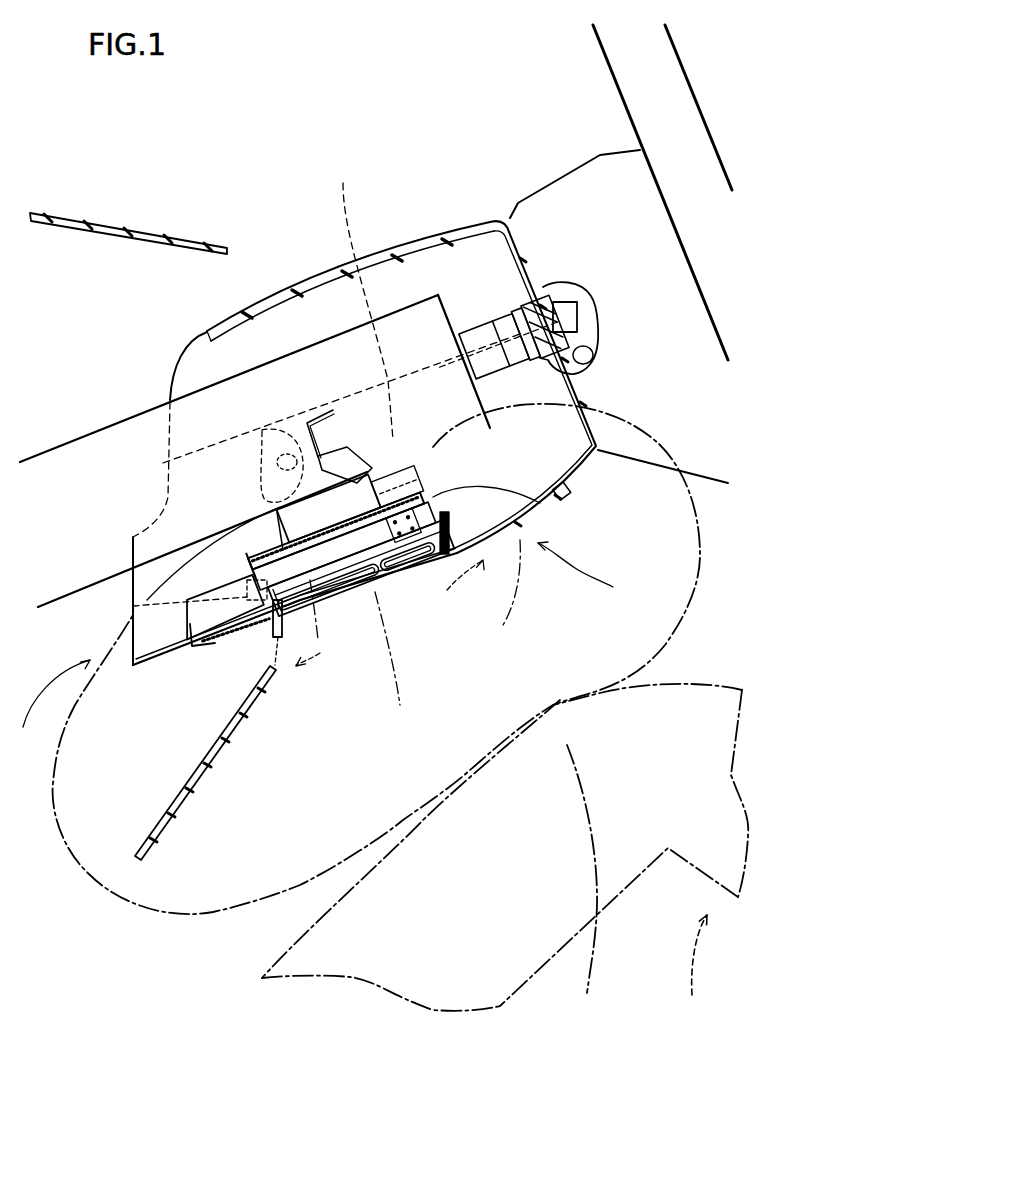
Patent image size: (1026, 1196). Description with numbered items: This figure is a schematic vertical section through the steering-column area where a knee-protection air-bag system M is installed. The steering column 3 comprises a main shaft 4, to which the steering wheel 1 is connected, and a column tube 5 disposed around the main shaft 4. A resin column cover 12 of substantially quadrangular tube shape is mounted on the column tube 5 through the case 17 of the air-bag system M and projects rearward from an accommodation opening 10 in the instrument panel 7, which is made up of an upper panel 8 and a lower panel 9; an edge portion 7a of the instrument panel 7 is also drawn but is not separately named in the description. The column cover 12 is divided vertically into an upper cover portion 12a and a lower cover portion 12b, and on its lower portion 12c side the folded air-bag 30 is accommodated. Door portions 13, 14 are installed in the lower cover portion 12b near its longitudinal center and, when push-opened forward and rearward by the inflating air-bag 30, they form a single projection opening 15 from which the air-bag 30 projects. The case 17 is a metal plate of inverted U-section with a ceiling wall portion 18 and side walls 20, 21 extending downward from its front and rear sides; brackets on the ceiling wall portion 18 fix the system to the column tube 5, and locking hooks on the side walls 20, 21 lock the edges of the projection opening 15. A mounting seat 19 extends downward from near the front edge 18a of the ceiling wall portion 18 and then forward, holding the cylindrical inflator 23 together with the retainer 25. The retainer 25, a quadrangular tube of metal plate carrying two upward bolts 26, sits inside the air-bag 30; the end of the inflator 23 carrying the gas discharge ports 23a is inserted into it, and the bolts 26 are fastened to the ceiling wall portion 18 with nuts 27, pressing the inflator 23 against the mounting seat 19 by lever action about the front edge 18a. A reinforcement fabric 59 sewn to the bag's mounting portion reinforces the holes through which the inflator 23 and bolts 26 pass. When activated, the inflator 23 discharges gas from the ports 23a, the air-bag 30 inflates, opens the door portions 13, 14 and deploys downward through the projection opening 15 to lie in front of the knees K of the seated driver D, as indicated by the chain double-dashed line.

The steering wheel 1 is at (630, 90).
The steering column 3 is at (380, 287).
The main shaft 4 is at (512, 320).
The column tube 5 is at (427, 330).
The instrument panel 7 is at (153, 542).
The trim edge portion 7a is at (221, 752).
The upper panel 8 is at (107, 218).
The lower panel 9 is at (199, 821).
The accommodation opening 10 is at (272, 652).
The column cover 12 is at (374, 543).
The upper cover portion 12a is at (278, 289).
The lower cover portion 12b is at (356, 295).
The lower portion 12c is at (593, 578).
The door portion 13 is at (282, 652).
The door portion 14 is at (407, 578).
The projection opening 15 is at (342, 575).
The case 17 is at (267, 540).
The ceiling wall portion 18 is at (252, 510).
The front edge 18a is at (250, 558).
The mounting seat 19 is at (207, 655).
The side wall 20 is at (133, 606).
The side wall 21 is at (533, 500).
The inflator 23 is at (342, 563).
The gas discharge ports 23a is at (400, 503).
The retainer 25 is at (370, 480).
The bolts 26 is at (392, 490).
The nuts 27 is at (445, 470).
The air-bag 30 is at (348, 608).
The reinforcement fabric 59 is at (403, 588).
The air-bag system M is at (49, 708).
The knees K is at (505, 853).
The driver D is at (695, 969).